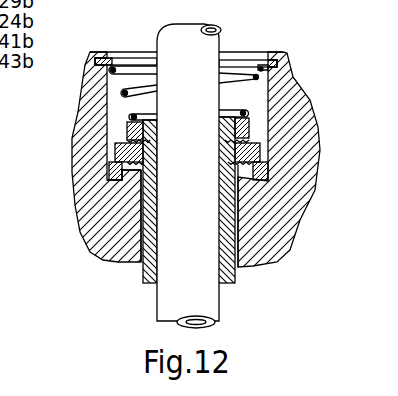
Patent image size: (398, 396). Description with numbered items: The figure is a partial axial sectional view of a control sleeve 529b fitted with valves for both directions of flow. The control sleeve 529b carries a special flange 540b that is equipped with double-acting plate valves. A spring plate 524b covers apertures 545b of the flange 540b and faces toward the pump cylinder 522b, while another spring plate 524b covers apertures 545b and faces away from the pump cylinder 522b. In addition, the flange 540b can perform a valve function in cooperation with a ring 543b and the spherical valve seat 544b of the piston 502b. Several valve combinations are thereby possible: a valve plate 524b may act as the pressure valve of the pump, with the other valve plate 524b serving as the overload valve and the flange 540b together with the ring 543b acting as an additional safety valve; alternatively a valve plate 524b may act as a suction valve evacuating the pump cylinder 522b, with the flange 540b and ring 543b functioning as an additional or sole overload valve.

The piston 502b is at (93, 56).
The pump cylinder 522b is at (141, 263).
The spring plate 524b is at (118, 138).
The control sleeve 529b is at (141, 281).
The flange 540b is at (115, 146).
The ring 543b is at (112, 188).
The spherical valve seat 544b is at (100, 226).
The apertures 545b is at (110, 161).